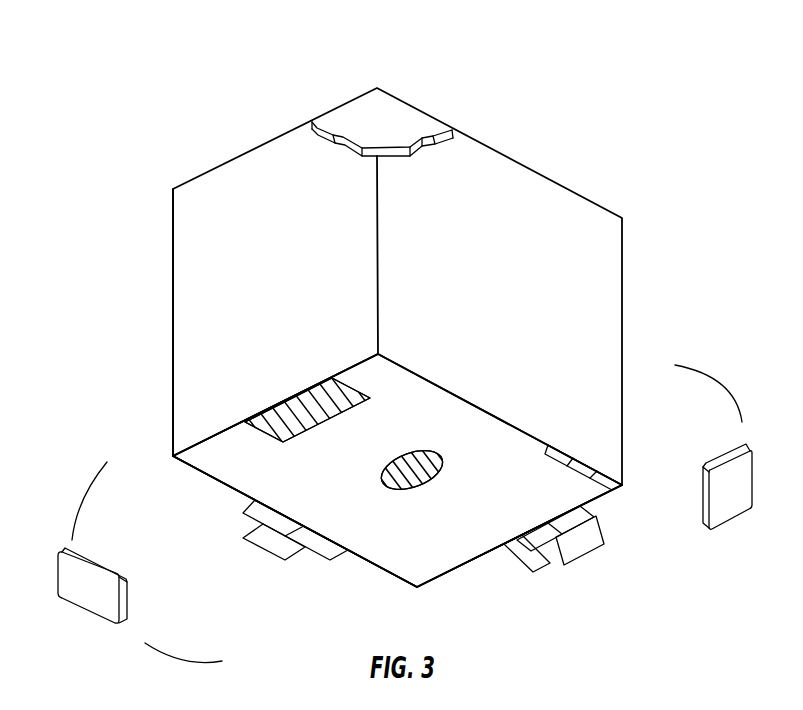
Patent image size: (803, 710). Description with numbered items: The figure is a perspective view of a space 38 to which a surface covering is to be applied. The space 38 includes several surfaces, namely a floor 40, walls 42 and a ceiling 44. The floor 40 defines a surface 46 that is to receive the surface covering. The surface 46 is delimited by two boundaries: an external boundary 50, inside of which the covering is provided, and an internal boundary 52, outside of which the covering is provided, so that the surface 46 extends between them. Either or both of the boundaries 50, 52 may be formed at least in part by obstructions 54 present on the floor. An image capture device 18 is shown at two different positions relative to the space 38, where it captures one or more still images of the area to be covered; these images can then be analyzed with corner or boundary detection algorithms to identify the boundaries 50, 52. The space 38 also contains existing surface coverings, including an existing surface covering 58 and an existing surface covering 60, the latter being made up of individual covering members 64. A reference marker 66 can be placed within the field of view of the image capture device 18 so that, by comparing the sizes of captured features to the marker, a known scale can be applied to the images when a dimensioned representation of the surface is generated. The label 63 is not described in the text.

The image capture device 18 is at (82, 600).
The space 38 is at (563, 112).
The floor 40 is at (207, 477).
The walls 42 is at (181, 238).
The ceiling 44 is at (417, 147).
The surface 46 is at (418, 568).
The boundary 50 is at (195, 443).
The boundary 52 is at (310, 428).
The obstructions 54 is at (312, 398).
The existing surface covering 58 is at (240, 592).
The existing surface covering 60 is at (614, 551).
The retention tab 63 is at (285, 548).
The covering members 64 is at (580, 568).
The reference marker 66 is at (563, 453).